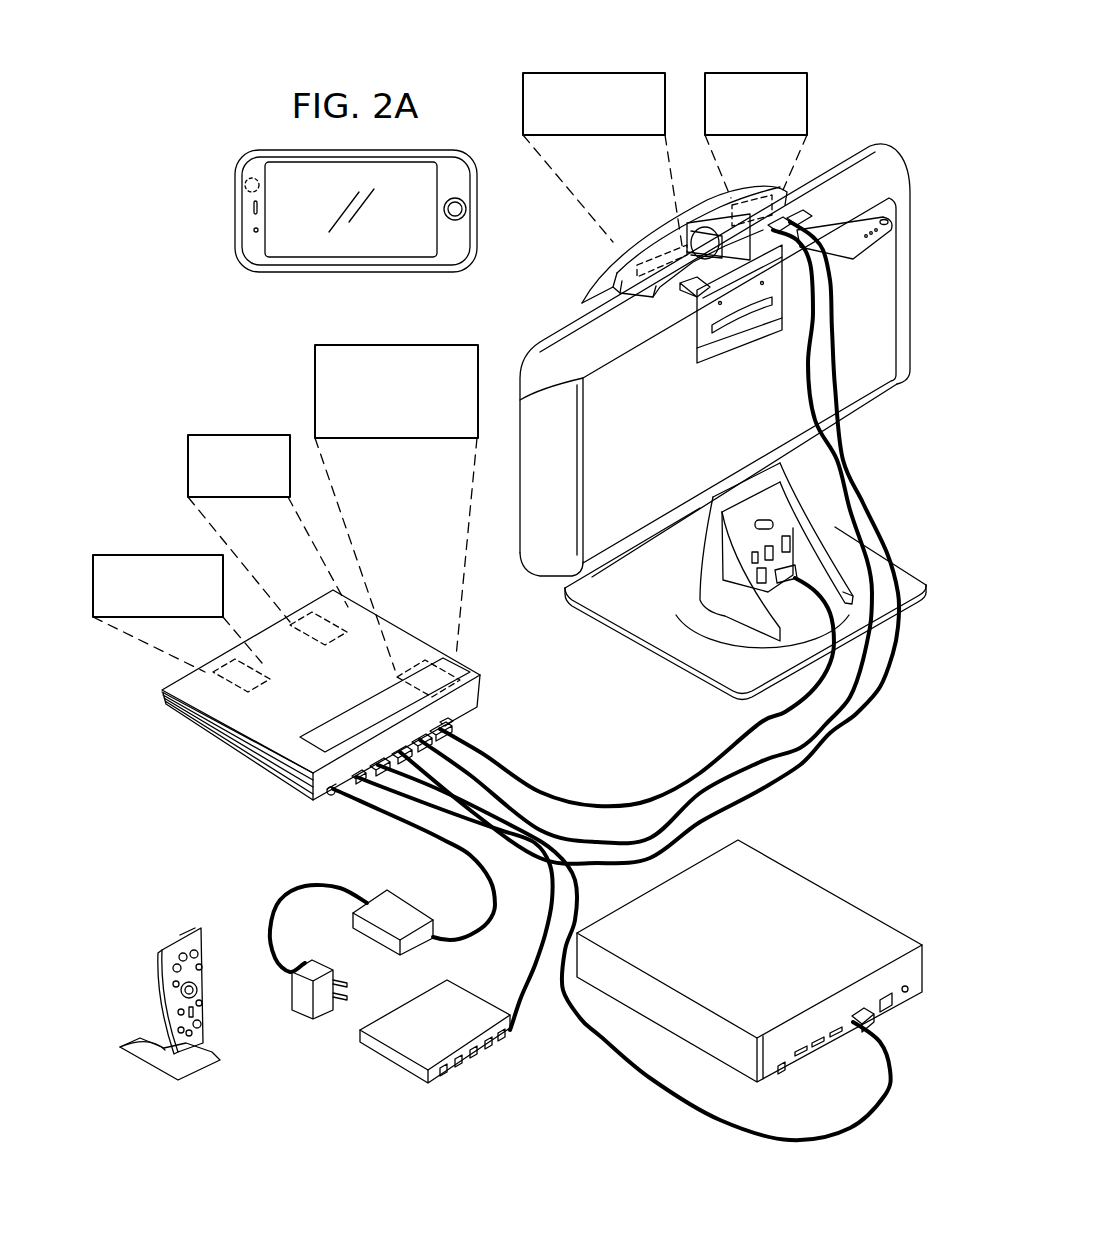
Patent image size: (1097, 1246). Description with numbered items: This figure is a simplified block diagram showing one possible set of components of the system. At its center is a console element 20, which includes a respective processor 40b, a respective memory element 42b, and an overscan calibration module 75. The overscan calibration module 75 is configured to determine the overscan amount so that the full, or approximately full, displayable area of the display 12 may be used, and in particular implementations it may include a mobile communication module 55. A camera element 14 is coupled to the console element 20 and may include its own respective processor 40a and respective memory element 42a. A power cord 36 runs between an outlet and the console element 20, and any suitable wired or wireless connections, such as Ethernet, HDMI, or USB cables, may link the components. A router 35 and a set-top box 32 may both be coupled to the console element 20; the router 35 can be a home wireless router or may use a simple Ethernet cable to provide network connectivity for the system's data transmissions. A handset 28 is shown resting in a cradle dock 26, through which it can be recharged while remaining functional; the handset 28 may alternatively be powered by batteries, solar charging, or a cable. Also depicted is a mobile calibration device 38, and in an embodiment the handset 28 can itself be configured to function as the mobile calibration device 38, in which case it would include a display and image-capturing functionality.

The display 12 is at (560, 323).
The camera element 14 is at (613, 267).
The console element 20 is at (314, 694).
The cradle dock 26 is at (153, 1067).
The handset 28 is at (205, 1012).
The set-top box 32 is at (737, 950).
The router 35 is at (393, 1067).
The power cord 36 is at (374, 903).
The mobile calibration device 38 is at (237, 208).
The processor 40a is at (594, 73).
The processor 40b is at (158, 555).
The memory element 42a is at (758, 73).
The memory element 42b is at (240, 435).
The mobile communication module 55 is at (398, 345).
The overscan calibration module 75 is at (456, 673).